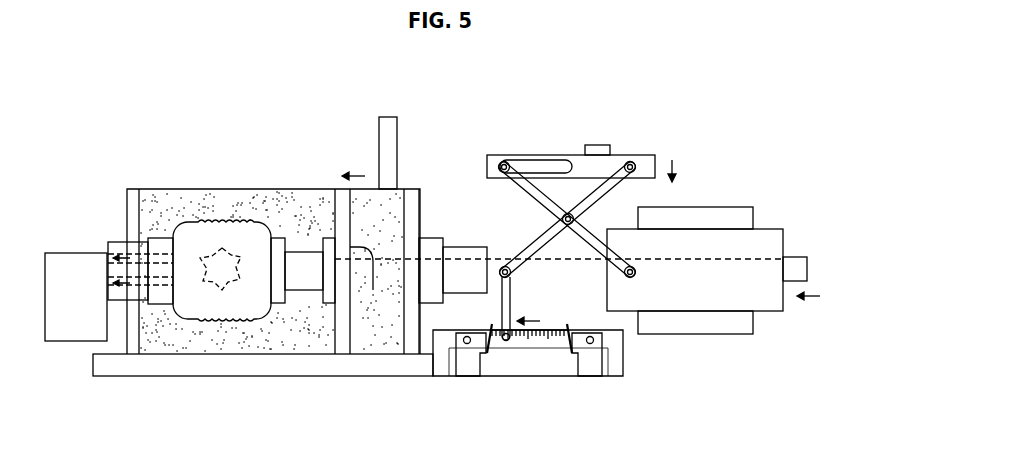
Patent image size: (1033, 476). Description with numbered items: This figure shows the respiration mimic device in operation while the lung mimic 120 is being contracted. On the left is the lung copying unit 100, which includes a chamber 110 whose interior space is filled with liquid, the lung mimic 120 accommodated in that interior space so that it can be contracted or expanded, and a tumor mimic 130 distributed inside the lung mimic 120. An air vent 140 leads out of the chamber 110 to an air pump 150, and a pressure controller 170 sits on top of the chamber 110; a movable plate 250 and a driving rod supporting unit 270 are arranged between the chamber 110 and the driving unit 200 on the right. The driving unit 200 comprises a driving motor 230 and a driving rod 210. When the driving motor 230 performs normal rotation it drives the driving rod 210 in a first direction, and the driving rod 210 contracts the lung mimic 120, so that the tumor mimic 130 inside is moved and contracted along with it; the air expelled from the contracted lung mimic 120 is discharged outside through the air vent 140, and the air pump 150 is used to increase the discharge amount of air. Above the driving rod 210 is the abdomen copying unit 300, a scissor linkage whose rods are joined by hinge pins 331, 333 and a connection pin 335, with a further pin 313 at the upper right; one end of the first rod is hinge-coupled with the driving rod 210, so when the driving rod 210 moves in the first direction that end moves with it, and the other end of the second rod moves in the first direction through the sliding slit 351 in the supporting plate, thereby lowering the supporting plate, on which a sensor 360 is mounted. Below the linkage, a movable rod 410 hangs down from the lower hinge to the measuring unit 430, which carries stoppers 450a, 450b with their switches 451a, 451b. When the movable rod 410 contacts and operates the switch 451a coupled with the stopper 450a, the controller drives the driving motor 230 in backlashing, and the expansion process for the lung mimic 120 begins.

The lung copying unit 100 is at (192, 148).
The chamber 110 is at (167, 190).
The lung mimic 120 is at (197, 320).
The tumor mimic 130 is at (226, 292).
The air vent 140 is at (119, 248).
The air pump 150 is at (89, 253).
The pressure controller 170 is at (387, 150).
The movable plate 250 is at (345, 205).
The driving rod supporting unit 270 is at (457, 247).
The driving unit 200 is at (762, 203).
The driving rod 210 is at (797, 257).
The driving motor 230 is at (753, 318).
The abdomen copying unit 300 is at (668, 114).
The upper right pivot pin 313 is at (634, 162).
The hinge pin 331 is at (626, 275).
The hinge pin 333 is at (575, 217).
The connection pin 335 is at (505, 161).
The sliding slit 351 is at (538, 165).
The sensor 360 is at (598, 145).
The movable rod 410 is at (504, 265).
The measuring unit 430 is at (623, 350).
The stopper 450a is at (470, 368).
The stopper 450b is at (585, 372).
The switch 451a is at (489, 356).
The switch 451b is at (567, 353).